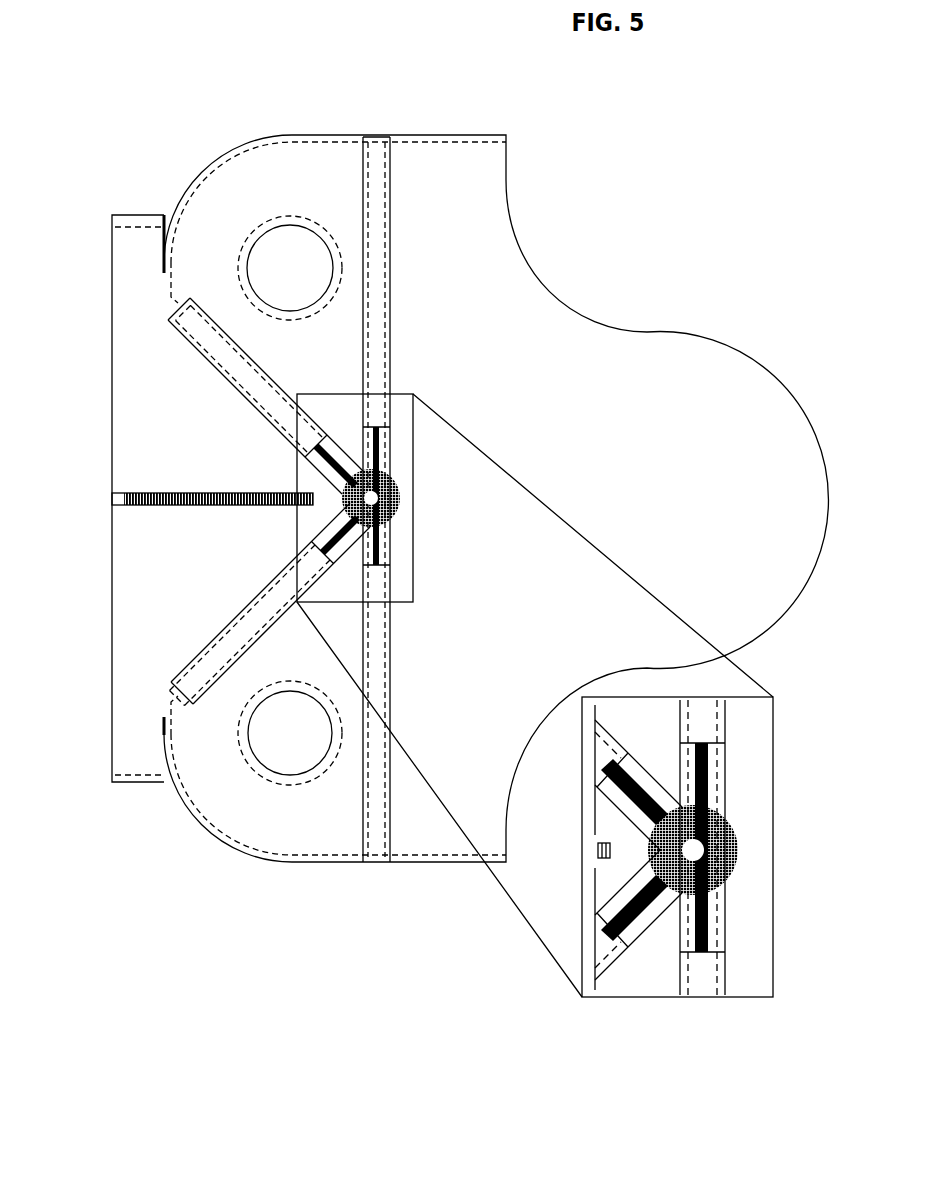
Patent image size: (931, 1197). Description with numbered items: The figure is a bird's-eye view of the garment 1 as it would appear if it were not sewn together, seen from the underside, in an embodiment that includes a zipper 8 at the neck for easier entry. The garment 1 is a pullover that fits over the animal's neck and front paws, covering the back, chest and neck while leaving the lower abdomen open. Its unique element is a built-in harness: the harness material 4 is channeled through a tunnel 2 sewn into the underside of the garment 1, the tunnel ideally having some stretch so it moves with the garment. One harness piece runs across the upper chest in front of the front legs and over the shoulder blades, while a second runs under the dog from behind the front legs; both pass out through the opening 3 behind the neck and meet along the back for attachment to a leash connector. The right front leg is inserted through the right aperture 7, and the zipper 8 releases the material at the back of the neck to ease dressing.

The garment 1 is at (680, 435).
The tunnel 2 is at (380, 217).
The opening 3 is at (738, 840).
The harness material 4 is at (708, 762).
The right aperture 7 is at (292, 277).
The zipper 8 is at (177, 507).